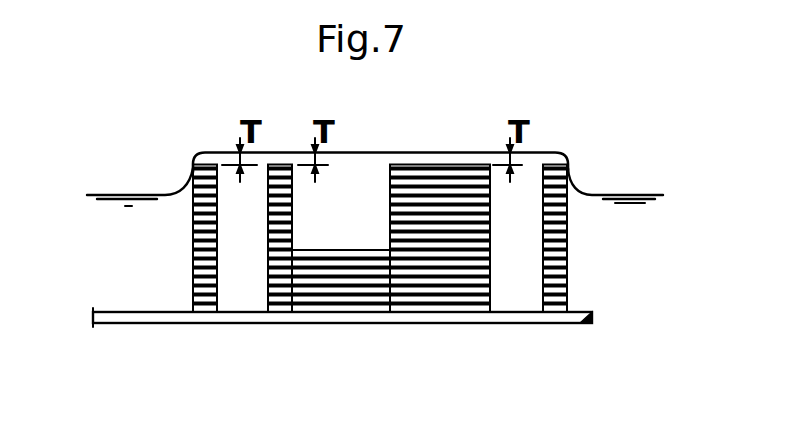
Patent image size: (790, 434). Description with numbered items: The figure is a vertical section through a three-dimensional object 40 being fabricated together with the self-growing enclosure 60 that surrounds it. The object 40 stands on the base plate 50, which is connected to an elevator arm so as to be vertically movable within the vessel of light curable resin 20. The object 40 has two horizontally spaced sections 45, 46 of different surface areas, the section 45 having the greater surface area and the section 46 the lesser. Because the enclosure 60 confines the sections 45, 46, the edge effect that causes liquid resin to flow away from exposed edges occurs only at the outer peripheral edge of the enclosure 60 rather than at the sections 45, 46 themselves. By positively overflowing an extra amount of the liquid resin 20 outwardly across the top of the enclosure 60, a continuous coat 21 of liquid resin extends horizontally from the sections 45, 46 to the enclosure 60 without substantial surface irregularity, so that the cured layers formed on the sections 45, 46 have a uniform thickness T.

The light curable resin 20 is at (118, 212).
The continuous coat 21 is at (427, 160).
The enclosure 60 is at (197, 253).
The section 46 is at (280, 210).
The three-dimensional object 40 is at (387, 292).
The section 45 is at (447, 210).
The base plate 50 is at (141, 318).